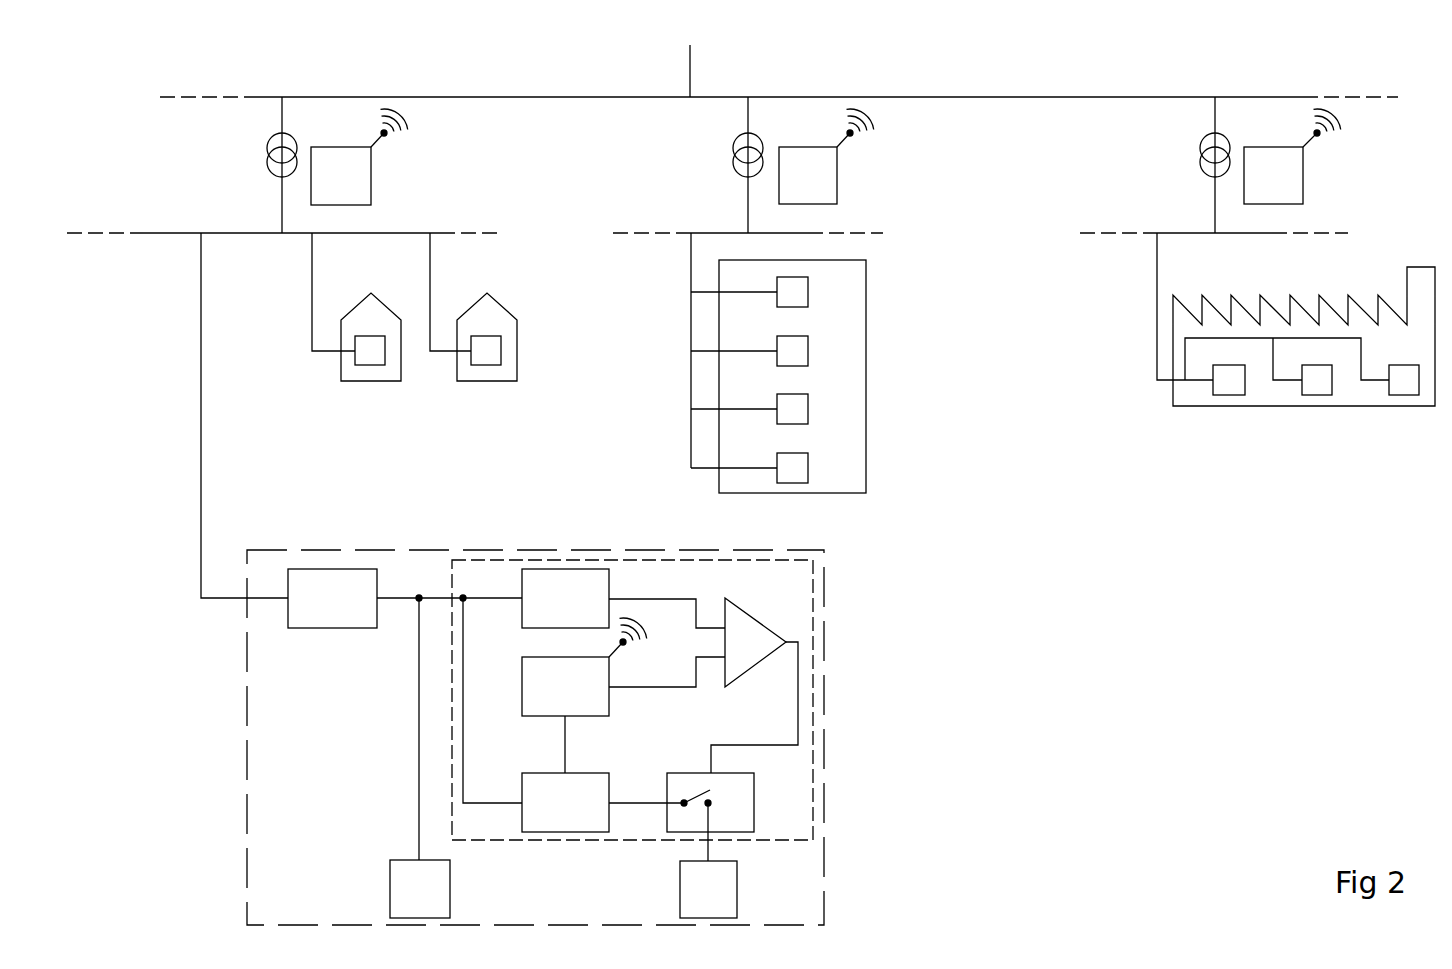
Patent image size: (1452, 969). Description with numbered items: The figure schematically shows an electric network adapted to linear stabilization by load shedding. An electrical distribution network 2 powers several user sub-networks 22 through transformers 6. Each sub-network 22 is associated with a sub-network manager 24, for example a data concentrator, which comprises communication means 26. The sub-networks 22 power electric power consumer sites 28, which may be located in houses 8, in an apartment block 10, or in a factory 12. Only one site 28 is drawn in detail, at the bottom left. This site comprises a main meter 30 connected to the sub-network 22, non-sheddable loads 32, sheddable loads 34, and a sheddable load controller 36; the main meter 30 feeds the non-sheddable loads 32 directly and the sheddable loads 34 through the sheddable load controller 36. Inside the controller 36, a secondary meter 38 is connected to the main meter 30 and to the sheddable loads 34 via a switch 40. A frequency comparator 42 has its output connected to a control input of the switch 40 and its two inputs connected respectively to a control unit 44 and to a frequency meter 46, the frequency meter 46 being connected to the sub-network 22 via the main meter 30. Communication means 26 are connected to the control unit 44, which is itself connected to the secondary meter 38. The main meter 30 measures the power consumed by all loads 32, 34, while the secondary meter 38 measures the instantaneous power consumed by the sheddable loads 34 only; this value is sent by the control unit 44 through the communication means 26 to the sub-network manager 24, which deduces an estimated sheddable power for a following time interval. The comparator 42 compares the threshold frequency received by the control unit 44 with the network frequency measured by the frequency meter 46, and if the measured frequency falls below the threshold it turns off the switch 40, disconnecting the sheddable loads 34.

The electrical distribution network 2 is at (693, 55).
The transformer 6 is at (268, 148).
The house 8 is at (387, 373).
The apartment block 10 is at (742, 485).
The factory 12 is at (1180, 398).
The user sub-network 22 is at (452, 233).
The sub-network manager 24 is at (807, 176).
The communication means 26 is at (388, 137).
The electric power consumer site 28 is at (367, 358).
The main meter 30 is at (289, 430).
The non-sheddable loads 32 is at (421, 756).
The sheddable loads 34 is at (708, 860).
The sheddable load controller 36 is at (572, 843).
The secondary meter 38 is at (573, 715).
The switch 40 is at (755, 800).
The frequency comparator 42 is at (760, 613).
The control unit 44 is at (623, 715).
The frequency meter 46 is at (594, 598).